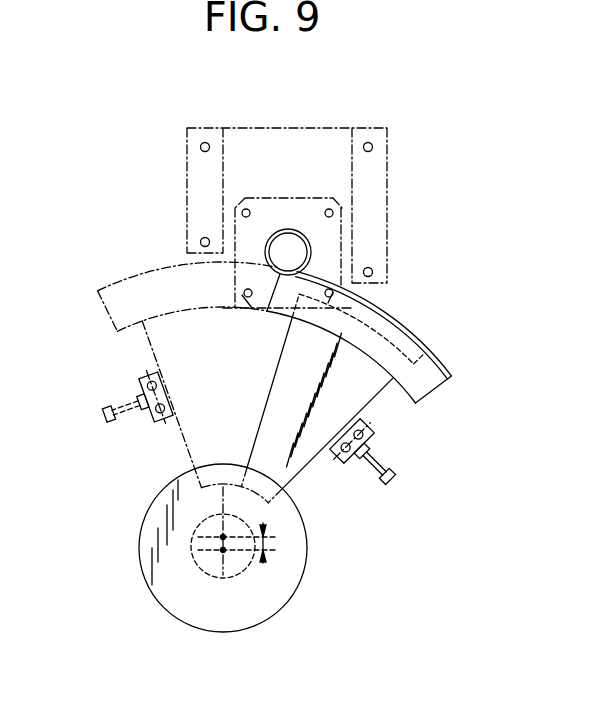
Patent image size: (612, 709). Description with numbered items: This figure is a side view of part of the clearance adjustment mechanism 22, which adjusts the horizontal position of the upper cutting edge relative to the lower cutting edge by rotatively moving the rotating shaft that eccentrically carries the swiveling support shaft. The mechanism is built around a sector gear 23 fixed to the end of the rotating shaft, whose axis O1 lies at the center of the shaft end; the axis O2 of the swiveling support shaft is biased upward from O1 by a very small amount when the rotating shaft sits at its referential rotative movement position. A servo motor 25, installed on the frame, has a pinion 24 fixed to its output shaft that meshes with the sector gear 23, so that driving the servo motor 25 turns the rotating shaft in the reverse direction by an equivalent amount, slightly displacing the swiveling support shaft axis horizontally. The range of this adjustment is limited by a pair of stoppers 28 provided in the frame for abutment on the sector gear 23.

The clearance adjustment mechanism 22 is at (131, 256).
The sector gear 23 is at (422, 387).
The pinion 24 is at (288, 229).
The servo motor 25 is at (342, 240).
The stoppers 28 is at (391, 480).
The axis of the rotating shaft O1 is at (223, 550).
The axis of the swiveling support shaft O2 is at (223, 537).